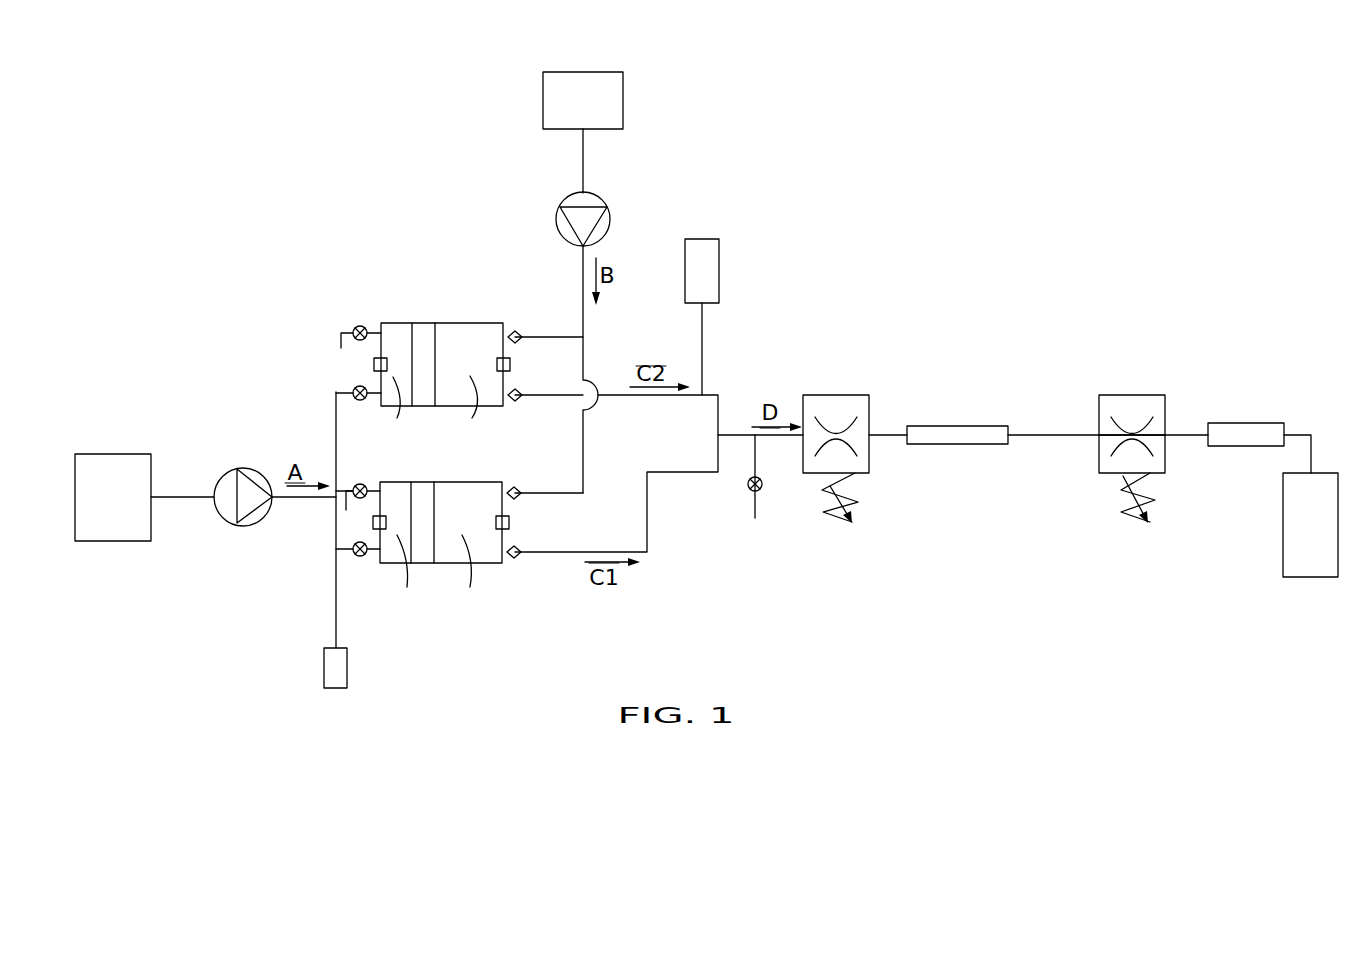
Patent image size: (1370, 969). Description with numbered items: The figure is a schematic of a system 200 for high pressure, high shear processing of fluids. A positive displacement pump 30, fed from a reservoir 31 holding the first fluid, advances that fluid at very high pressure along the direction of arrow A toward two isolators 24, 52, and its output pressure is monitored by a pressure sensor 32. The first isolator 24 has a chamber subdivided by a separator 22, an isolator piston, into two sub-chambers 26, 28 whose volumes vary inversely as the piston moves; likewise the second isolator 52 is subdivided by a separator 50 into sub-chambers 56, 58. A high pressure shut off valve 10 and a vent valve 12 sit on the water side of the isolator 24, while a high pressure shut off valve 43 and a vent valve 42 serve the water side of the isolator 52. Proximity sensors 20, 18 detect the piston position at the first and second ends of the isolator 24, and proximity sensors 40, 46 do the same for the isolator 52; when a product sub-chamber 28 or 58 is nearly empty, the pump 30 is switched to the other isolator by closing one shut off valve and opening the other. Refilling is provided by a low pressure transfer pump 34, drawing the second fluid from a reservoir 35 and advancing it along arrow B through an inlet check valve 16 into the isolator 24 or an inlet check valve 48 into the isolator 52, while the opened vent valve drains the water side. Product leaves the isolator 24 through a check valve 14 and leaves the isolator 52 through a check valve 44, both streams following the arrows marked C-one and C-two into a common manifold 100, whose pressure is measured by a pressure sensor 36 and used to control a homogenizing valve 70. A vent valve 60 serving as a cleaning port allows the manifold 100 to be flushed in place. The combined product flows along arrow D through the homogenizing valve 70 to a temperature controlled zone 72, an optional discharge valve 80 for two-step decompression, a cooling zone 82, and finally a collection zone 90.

The high pressure shut off valve 10 is at (362, 560).
The vent valve 12 is at (354, 486).
The check valve 14 is at (519, 556).
The inlet check valve 16 is at (519, 489).
The proximity sensor 18 is at (510, 516).
The proximity sensor 20 is at (353, 528).
The separator 22 is at (421, 488).
The isolator 24 is at (483, 480).
The sub-chamber 26 is at (405, 574).
The sub-chamber 28 is at (470, 574).
The positive displacement pump 30 is at (245, 463).
The reservoir 31 is at (110, 454).
The pressure sensor 32 is at (322, 665).
The low pressure transfer pump 34 is at (597, 190).
The reservoir 35 is at (571, 70).
The pressure sensor 36 is at (706, 237).
The proximity sensor 40 is at (373, 362).
The vent valve 42 is at (358, 326).
The high pressure shut off valve 43 is at (354, 388).
The check valve 44 is at (519, 398).
The proximity sensor 46 is at (511, 362).
The inlet check valve 48 is at (520, 334).
The separator 50 is at (423, 330).
The isolator 52 is at (397, 322).
The sub-chamber 56 is at (392, 410).
The sub-chamber 58 is at (472, 409).
The vent valve 60 is at (763, 486).
The homogenizing valve 70 is at (832, 393).
The temperature controlled zone 72 is at (942, 425).
The discharge valve 80 is at (1118, 393).
The cooling zone 82 is at (1237, 422).
The collection zone 90 is at (1303, 578).
The common manifold 100 is at (735, 428).
The system 200 is at (1000, 255).